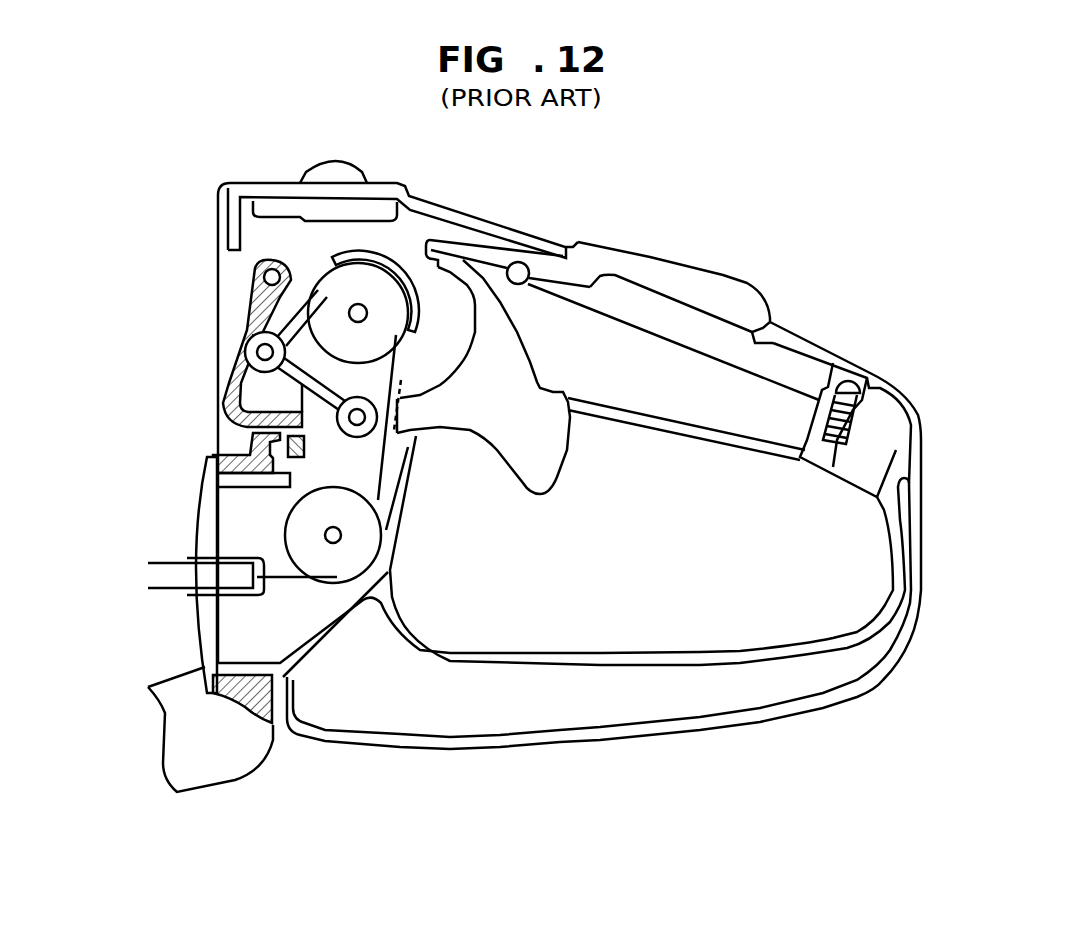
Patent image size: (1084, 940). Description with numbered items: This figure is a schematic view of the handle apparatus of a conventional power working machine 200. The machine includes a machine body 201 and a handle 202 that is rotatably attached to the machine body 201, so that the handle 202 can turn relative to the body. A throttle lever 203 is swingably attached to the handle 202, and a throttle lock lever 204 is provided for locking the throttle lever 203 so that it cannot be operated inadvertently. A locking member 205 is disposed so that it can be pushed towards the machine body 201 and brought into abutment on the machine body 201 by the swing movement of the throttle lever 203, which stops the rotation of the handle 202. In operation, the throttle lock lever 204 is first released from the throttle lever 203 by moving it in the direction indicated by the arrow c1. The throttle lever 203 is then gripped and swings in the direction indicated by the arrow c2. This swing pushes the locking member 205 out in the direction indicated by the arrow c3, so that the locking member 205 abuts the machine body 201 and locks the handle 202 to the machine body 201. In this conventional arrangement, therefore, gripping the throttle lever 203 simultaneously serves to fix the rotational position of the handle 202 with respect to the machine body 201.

The power working machine 200 is at (177, 157).
The machine body 201 is at (137, 697).
The handle 202 is at (840, 318).
The throttle lever 203 is at (582, 480).
The throttle lock lever 204 is at (673, 242).
The locking member 205 is at (223, 325).
The arrow c1 is at (723, 337).
The arrow c2 is at (592, 333).
The arrow c3 is at (207, 397).